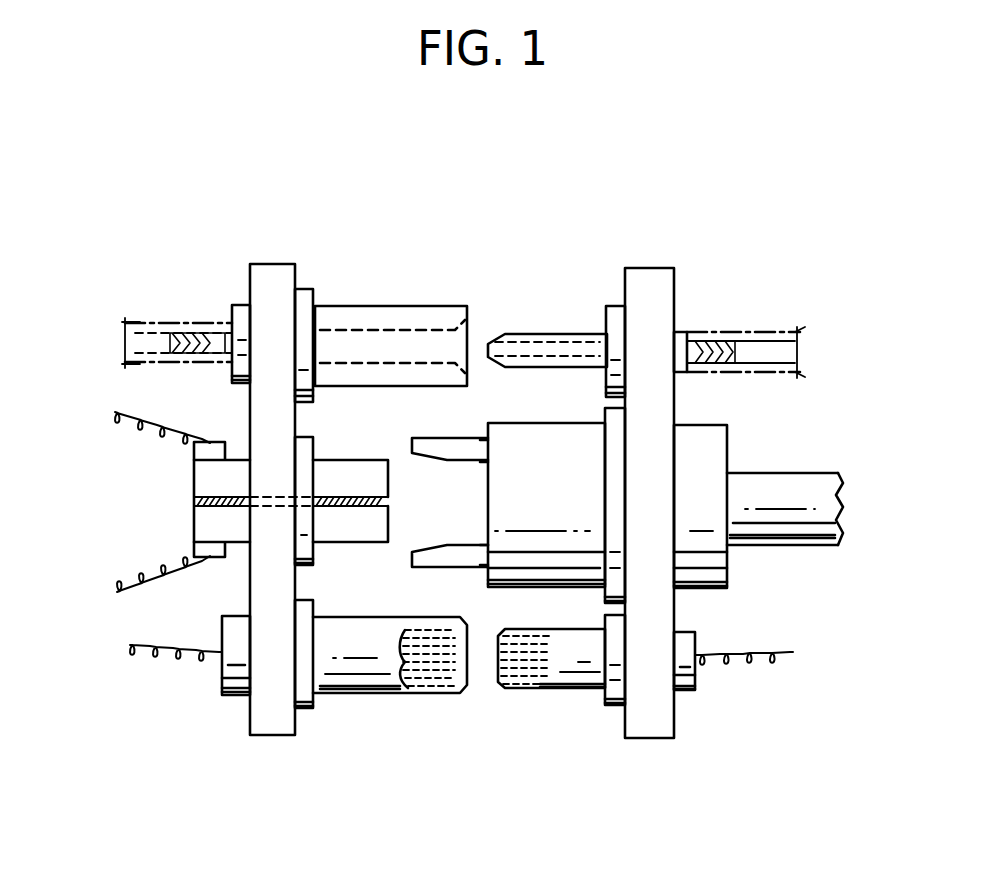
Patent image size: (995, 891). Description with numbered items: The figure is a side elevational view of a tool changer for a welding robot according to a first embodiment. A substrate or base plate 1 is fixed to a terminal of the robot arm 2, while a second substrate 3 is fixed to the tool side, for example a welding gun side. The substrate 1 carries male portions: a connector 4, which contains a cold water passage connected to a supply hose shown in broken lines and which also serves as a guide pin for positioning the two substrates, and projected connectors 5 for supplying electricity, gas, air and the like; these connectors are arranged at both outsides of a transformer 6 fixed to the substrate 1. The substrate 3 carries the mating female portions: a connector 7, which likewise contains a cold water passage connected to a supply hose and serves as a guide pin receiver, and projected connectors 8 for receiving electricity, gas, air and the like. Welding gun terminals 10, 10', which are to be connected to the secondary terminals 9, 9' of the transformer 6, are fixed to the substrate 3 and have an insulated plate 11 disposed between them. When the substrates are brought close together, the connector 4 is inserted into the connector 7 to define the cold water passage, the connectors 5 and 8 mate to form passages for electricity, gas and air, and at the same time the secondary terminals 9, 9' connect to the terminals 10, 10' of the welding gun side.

The substrate 1 is at (648, 275).
The robot arm 2 is at (800, 478).
The substrate 3 is at (272, 270).
The connector 4 is at (550, 330).
The projected connector 5 is at (565, 672).
The transformer 6 is at (537, 435).
The connector 7 is at (390, 305).
The projected connector 8 is at (370, 682).
The secondary terminal 9 is at (450, 426).
The secondary terminal 9' is at (450, 579).
The welding gun terminal 10 is at (251, 495).
The welding gun terminal 10' is at (354, 561).
The insulated plate 11 is at (340, 507).